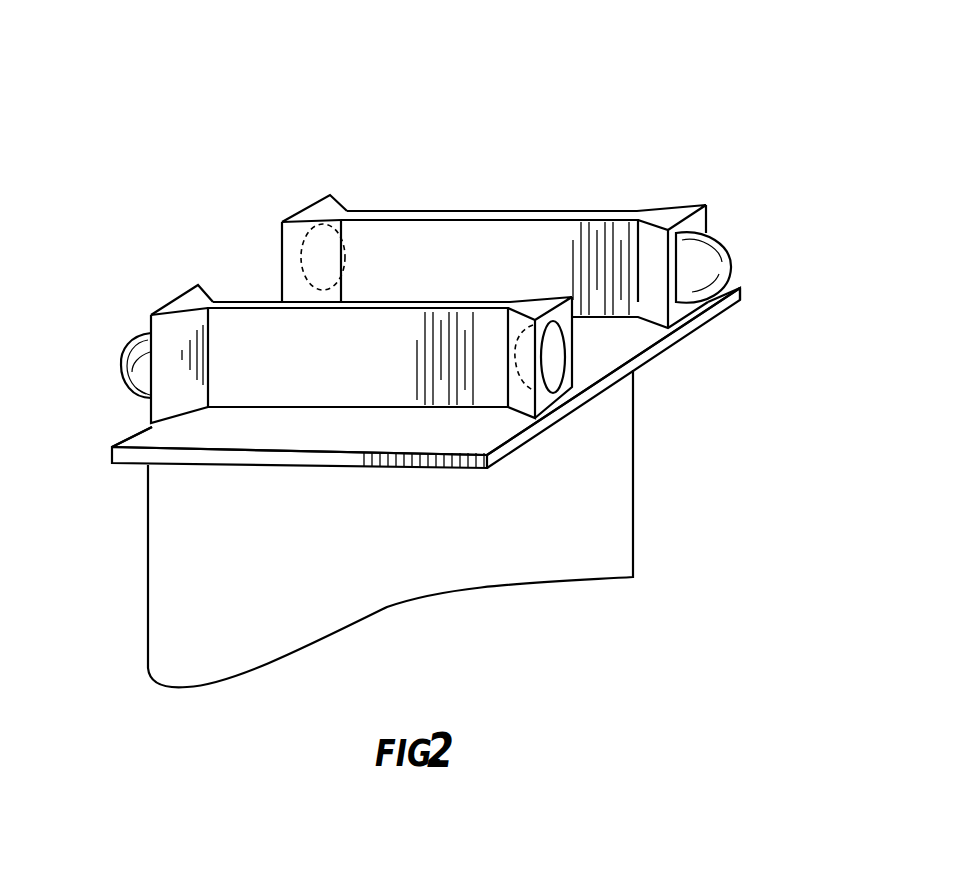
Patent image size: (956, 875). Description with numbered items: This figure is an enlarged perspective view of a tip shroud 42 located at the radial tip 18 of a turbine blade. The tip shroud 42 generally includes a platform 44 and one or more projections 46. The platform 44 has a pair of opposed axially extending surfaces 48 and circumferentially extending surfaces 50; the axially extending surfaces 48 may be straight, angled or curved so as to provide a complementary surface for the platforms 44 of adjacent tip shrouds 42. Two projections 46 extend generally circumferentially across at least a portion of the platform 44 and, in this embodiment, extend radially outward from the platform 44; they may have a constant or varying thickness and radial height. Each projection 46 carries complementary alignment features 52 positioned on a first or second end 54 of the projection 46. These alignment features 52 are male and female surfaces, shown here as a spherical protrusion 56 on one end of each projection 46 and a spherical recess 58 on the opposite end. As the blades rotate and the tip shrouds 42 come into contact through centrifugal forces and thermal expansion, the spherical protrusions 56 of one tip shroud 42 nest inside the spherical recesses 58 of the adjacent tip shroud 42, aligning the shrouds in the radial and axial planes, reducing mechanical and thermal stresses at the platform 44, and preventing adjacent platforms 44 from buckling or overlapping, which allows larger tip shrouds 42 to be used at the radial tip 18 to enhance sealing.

The radial tip 18 is at (147, 468).
The tip shroud 42 is at (485, 122).
The platform 44 is at (335, 440).
The projection 46 is at (390, 370).
The axially extending surface 48 is at (137, 428).
The circumferentially extending surface 50 is at (340, 454).
The complementary alignment feature 52 is at (127, 343).
The spherical protrusion 56 is at (119, 378).
The end of the projection 54 is at (317, 205).
The spherical recess 58 is at (556, 366).